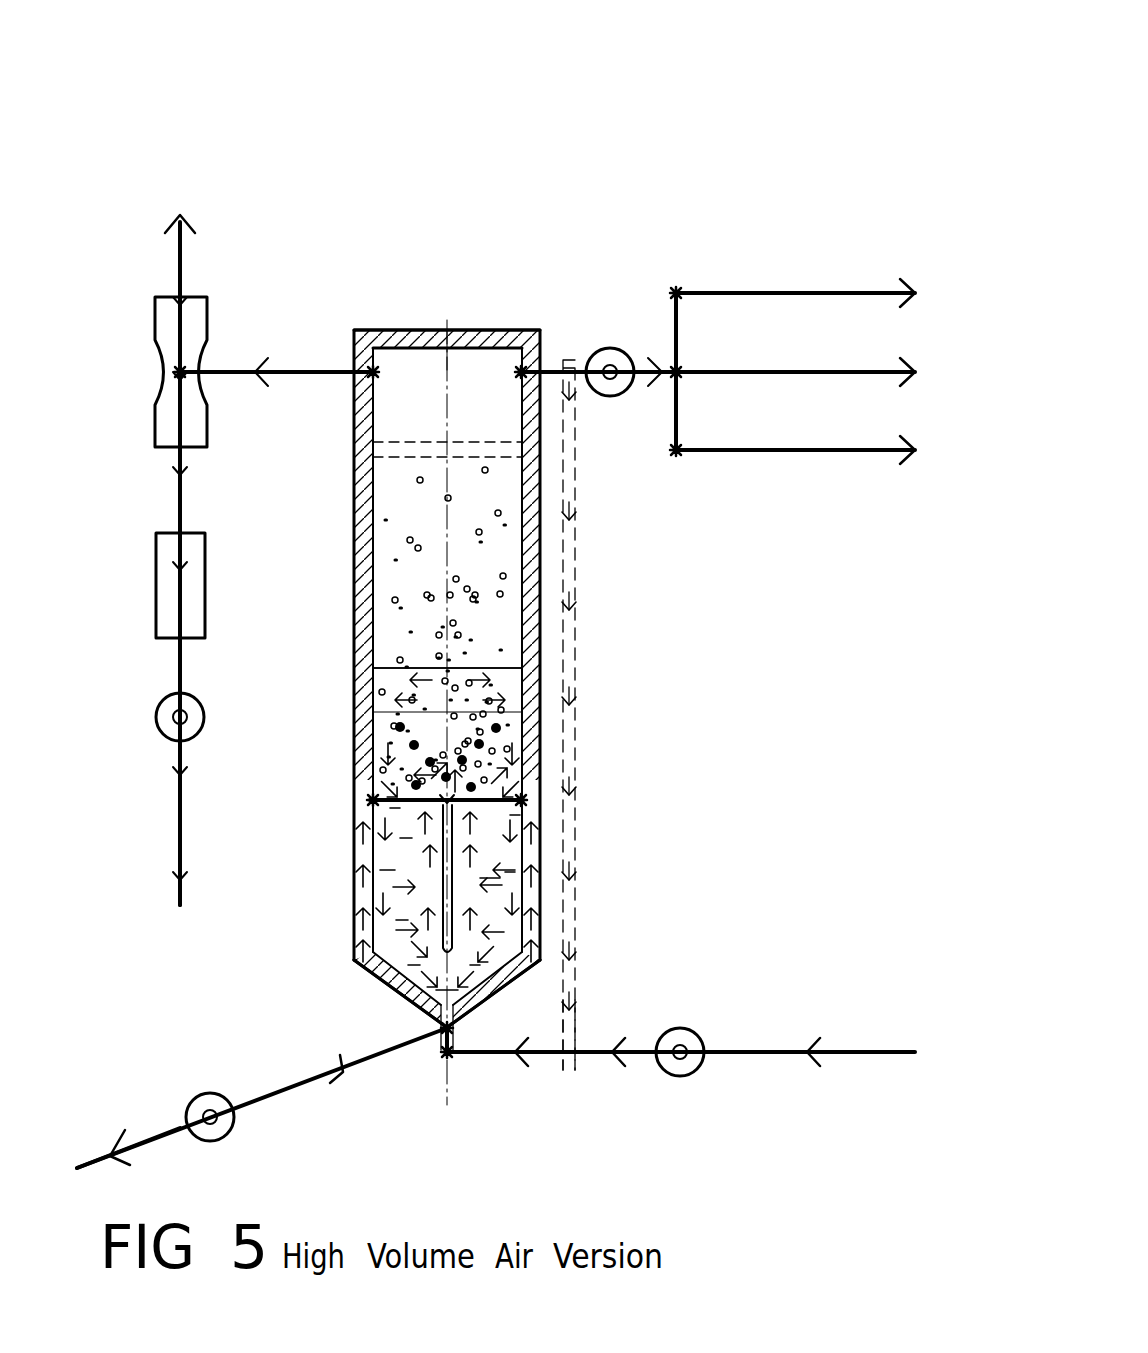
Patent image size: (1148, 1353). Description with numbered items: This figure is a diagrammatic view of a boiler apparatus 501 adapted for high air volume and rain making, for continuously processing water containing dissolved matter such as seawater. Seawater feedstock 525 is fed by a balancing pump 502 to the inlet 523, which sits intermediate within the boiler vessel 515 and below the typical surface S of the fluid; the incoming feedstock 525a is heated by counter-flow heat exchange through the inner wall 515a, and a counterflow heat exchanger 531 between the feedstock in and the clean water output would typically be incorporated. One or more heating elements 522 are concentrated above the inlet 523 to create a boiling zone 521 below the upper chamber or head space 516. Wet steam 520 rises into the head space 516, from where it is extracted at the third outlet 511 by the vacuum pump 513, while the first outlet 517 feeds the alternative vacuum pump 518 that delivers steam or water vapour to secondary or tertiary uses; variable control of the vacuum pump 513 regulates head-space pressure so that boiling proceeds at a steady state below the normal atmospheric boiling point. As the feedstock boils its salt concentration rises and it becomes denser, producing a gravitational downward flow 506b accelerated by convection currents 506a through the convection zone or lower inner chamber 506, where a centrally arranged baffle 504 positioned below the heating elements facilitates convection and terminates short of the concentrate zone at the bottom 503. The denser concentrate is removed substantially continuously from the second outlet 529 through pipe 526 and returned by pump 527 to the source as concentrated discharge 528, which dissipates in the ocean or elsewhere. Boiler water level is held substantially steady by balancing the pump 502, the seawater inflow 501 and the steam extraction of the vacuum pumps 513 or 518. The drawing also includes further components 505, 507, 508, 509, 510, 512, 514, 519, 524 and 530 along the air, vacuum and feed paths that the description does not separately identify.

The boiler apparatus 501 is at (383, 305).
The balancing pump 502 is at (680, 1076).
The bottom of boiler vessel 503 is at (440, 1003).
The baffle 504 is at (520, 848).
The ambient air inlet 505 is at (216, 875).
The lower inner chamber 506 is at (365, 855).
The convection currents 506a is at (365, 935).
The gravitational downward flow 506b is at (360, 758).
The air supply line 507 is at (185, 820).
The air blower 508 is at (195, 700).
The air line 509 is at (350, 600).
The air filter / heater unit 510 is at (205, 565).
The third outlet 511 is at (373, 374).
The vacuum line 512 is at (279, 357).
The vacuum pump 513 is at (207, 345).
The atmospheric injection outlet 514 is at (194, 167).
The boiler vessel 515 is at (418, 330).
The inner wall 515a is at (525, 885).
The head space 516 is at (460, 350).
The first outlet 517 is at (508, 340).
The alternative vacuum pump 518 is at (612, 348).
The condensate return path 519 is at (508, 458).
The wet steam 520 is at (505, 602).
The fluid surface S is at (505, 655).
The boiling zone 521 is at (505, 705).
The heating element 522 is at (505, 712).
The inlet 523 is at (505, 780).
The distribution plate (multiple radially) 524 is at (540, 797).
The feedstock 525 is at (530, 913).
The incoming feedstock 525a is at (535, 948).
The pipe 526 is at (128, 1131).
The pump 527 is at (205, 1090).
The concentrated discharge 528 is at (255, 1100).
The second outlet 529 is at (447, 1052).
The feedstock inlet junction 530 is at (447, 1060).
The counterflow heat exchanger 531 is at (560, 1012).